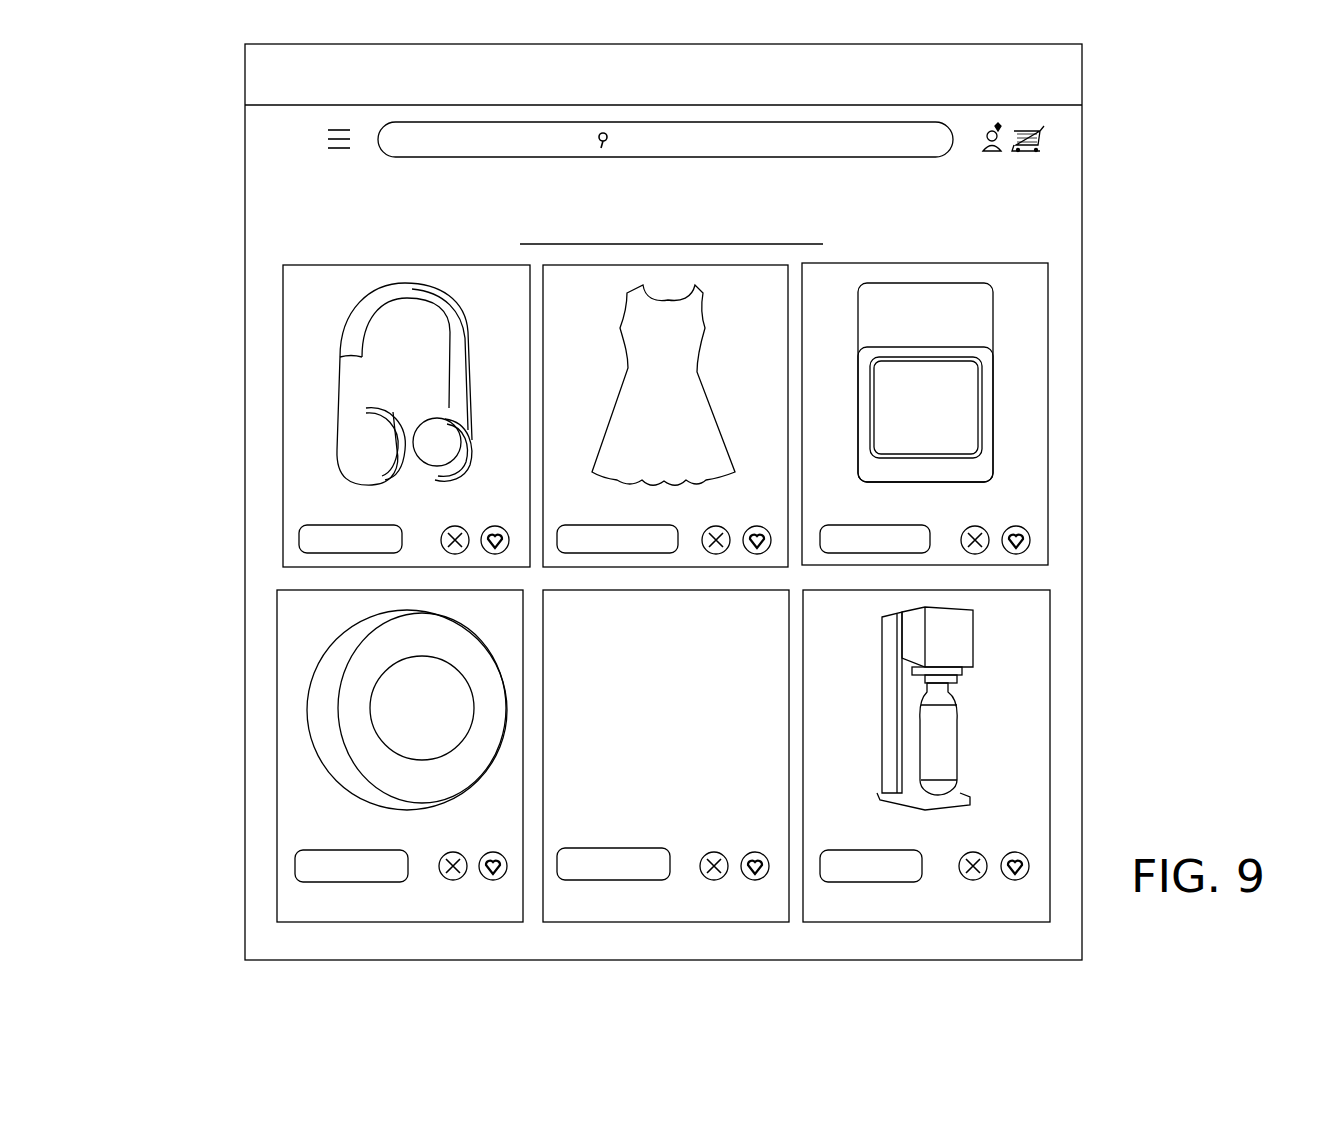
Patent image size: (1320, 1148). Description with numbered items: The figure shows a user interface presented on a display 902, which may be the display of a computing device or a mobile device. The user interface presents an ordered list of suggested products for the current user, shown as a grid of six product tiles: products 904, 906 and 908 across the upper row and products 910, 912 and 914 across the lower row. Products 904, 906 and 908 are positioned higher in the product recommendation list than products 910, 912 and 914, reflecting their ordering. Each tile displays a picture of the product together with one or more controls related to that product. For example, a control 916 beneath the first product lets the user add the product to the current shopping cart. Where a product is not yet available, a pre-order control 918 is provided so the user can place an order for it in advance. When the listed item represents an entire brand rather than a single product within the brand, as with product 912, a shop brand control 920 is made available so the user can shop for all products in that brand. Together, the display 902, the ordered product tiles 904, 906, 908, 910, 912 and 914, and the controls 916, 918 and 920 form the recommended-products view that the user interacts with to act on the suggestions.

The display 902 is at (245, 216).
The product 904 is at (367, 300).
The product 906 is at (697, 342).
The product 908 is at (903, 296).
The product 910 is at (307, 712).
The product 912 is at (650, 693).
The product 914 is at (975, 658).
The control 916 is at (305, 536).
The pre-order control 918 is at (928, 525).
The shop brand control 920 is at (658, 848).